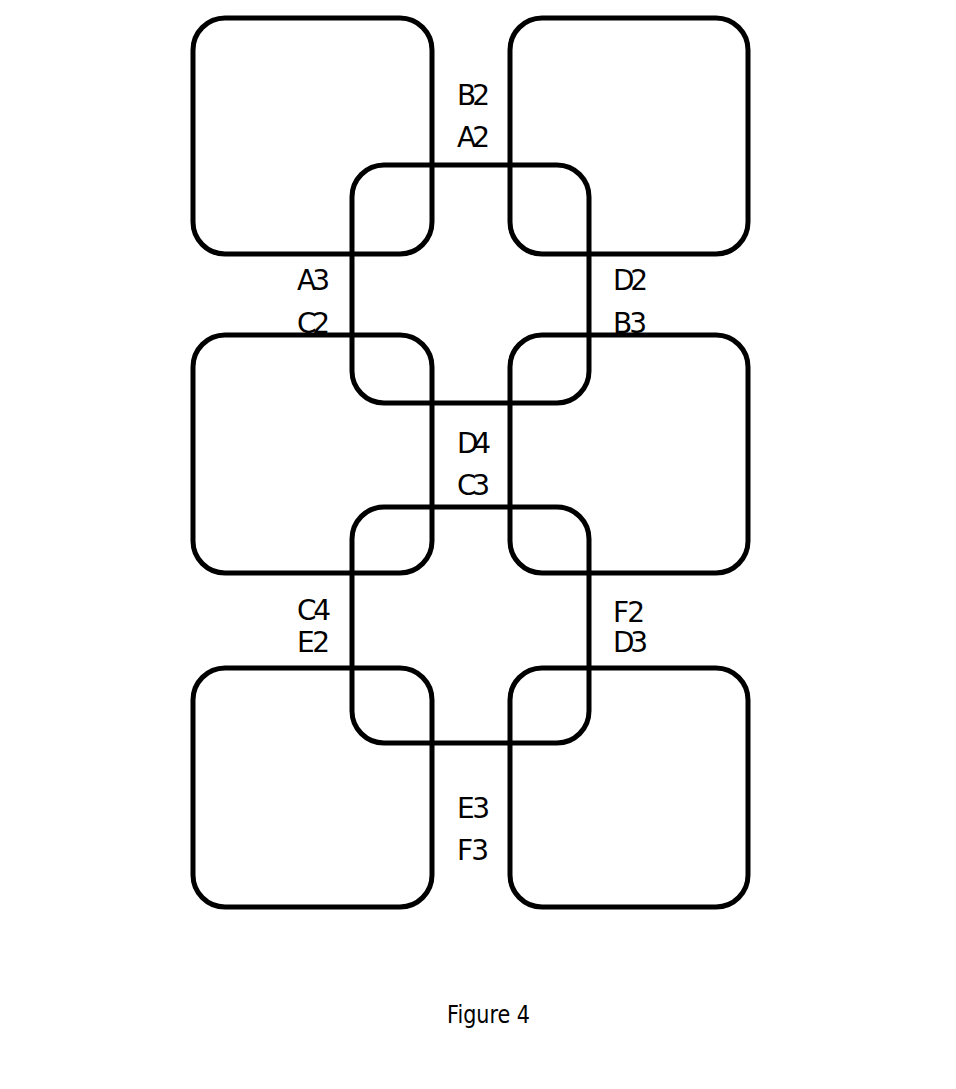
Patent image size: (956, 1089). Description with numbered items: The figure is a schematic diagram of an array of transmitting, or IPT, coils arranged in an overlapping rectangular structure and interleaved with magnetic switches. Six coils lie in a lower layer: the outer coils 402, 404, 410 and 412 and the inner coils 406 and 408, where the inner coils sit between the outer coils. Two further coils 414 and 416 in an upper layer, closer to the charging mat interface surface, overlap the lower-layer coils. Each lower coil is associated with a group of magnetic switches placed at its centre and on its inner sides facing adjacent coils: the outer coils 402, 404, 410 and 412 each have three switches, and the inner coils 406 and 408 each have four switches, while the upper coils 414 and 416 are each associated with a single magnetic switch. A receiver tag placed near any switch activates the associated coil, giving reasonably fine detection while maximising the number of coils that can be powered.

The transmitting coil 402 is at (252, 167).
The transmitting coil 404 is at (708, 94).
The transmitting coil 414 is at (390, 305).
The transmitting coil 406 is at (246, 472).
The transmitting coil 408 is at (707, 456).
The transmitting coil 416 is at (543, 623).
The transmitting coil 410 is at (270, 833).
The transmitting coil 412 is at (718, 805).